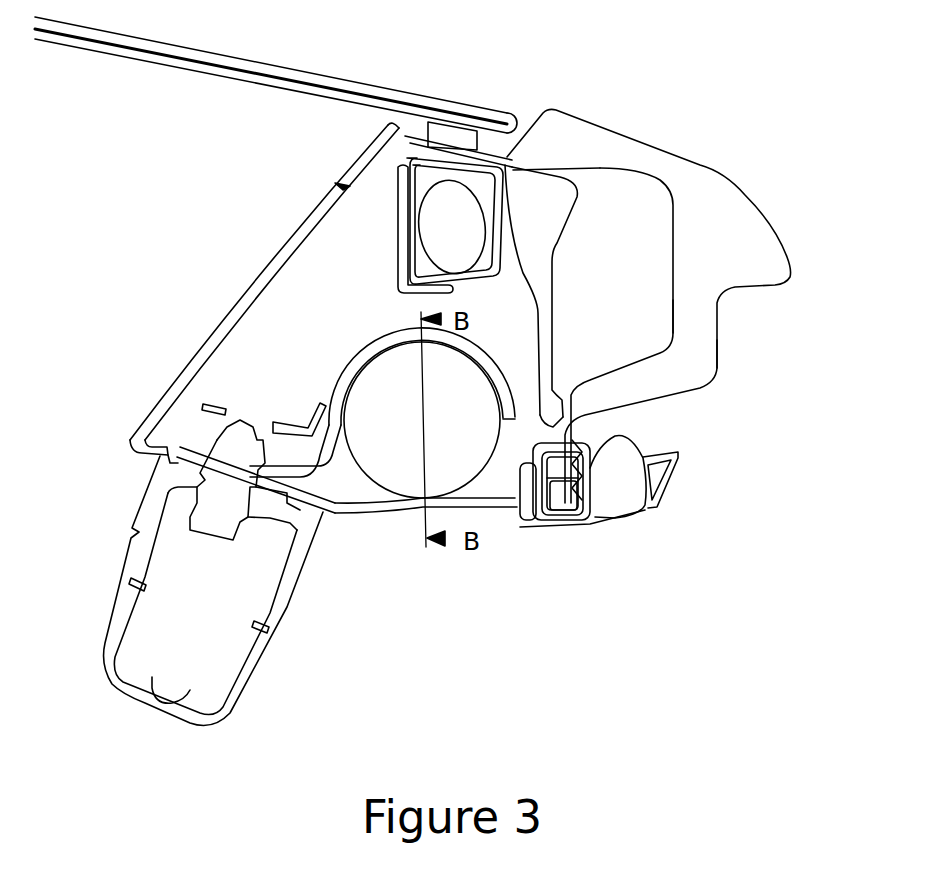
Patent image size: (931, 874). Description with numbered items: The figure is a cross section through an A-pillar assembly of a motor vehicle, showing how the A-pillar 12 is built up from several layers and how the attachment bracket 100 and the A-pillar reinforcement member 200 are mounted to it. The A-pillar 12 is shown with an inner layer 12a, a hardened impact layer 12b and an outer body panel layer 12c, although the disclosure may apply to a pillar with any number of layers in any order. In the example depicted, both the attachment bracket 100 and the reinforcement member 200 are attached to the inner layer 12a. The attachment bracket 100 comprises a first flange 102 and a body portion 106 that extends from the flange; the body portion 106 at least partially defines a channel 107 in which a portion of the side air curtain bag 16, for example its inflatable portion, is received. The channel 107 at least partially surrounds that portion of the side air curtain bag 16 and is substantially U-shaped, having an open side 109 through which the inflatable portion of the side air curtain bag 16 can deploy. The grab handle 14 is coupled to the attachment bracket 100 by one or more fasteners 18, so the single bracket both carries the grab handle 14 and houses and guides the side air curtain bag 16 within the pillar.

The A-pillar 12 is at (633, 257).
The inner layer 12a is at (535, 332).
The hardened impact layer 12b is at (667, 348).
The outer body panel layer 12c is at (693, 377).
The grab handle 14 is at (284, 659).
The side air curtain bag 16 is at (460, 487).
The fasteners 18 is at (232, 468).
The attachment bracket 100 is at (323, 398).
The first flange 102 is at (187, 445).
The body portion 106 is at (370, 340).
The channel 107 is at (413, 427).
The open side 109 is at (412, 503).
The A-pillar reinforcement member 200 is at (548, 247).